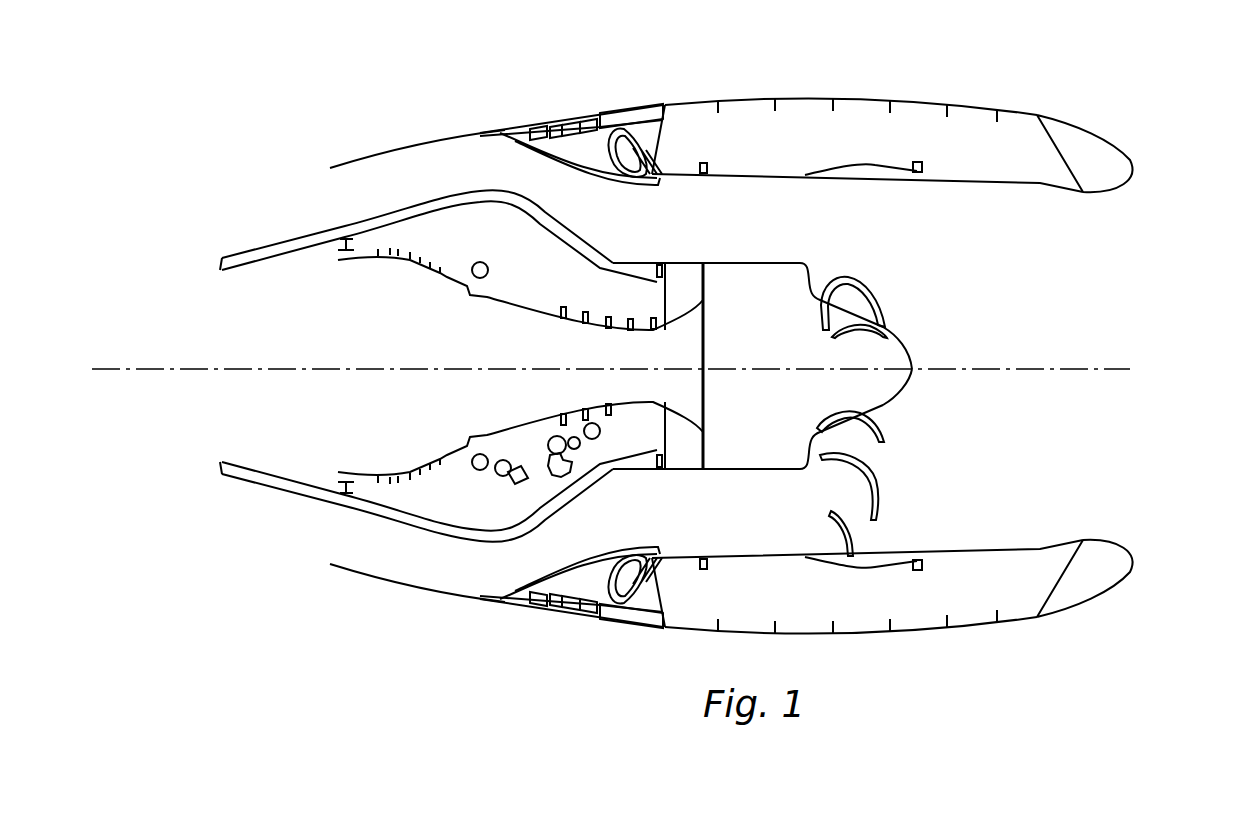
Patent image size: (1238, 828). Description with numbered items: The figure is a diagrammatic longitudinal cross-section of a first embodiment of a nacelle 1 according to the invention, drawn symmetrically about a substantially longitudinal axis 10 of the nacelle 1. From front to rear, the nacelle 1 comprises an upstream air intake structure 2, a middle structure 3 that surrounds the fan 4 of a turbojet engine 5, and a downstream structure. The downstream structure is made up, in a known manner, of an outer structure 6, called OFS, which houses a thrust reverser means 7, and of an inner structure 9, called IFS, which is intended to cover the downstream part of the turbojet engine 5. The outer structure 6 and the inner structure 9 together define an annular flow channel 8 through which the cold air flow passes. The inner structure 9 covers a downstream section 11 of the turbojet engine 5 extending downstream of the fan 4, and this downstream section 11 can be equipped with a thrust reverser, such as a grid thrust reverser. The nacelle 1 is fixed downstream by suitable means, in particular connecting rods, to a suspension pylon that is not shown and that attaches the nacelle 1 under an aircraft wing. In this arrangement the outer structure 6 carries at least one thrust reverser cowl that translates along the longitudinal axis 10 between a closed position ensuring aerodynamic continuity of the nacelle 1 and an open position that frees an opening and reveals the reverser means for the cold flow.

The nacelle 1 is at (1048, 72).
The upstream air intake structure 2 is at (1132, 138).
The middle structure 3 is at (805, 92).
The fan 4 is at (787, 399).
The turbojet engine 5 is at (570, 381).
The outer structure 6 is at (505, 127).
The thrust reverser means 7 is at (645, 117).
The annular flow channel 8 is at (403, 182).
The inner structure 9 is at (346, 219).
The longitudinal axis 10 is at (1126, 369).
The downstream section 11 is at (603, 100).